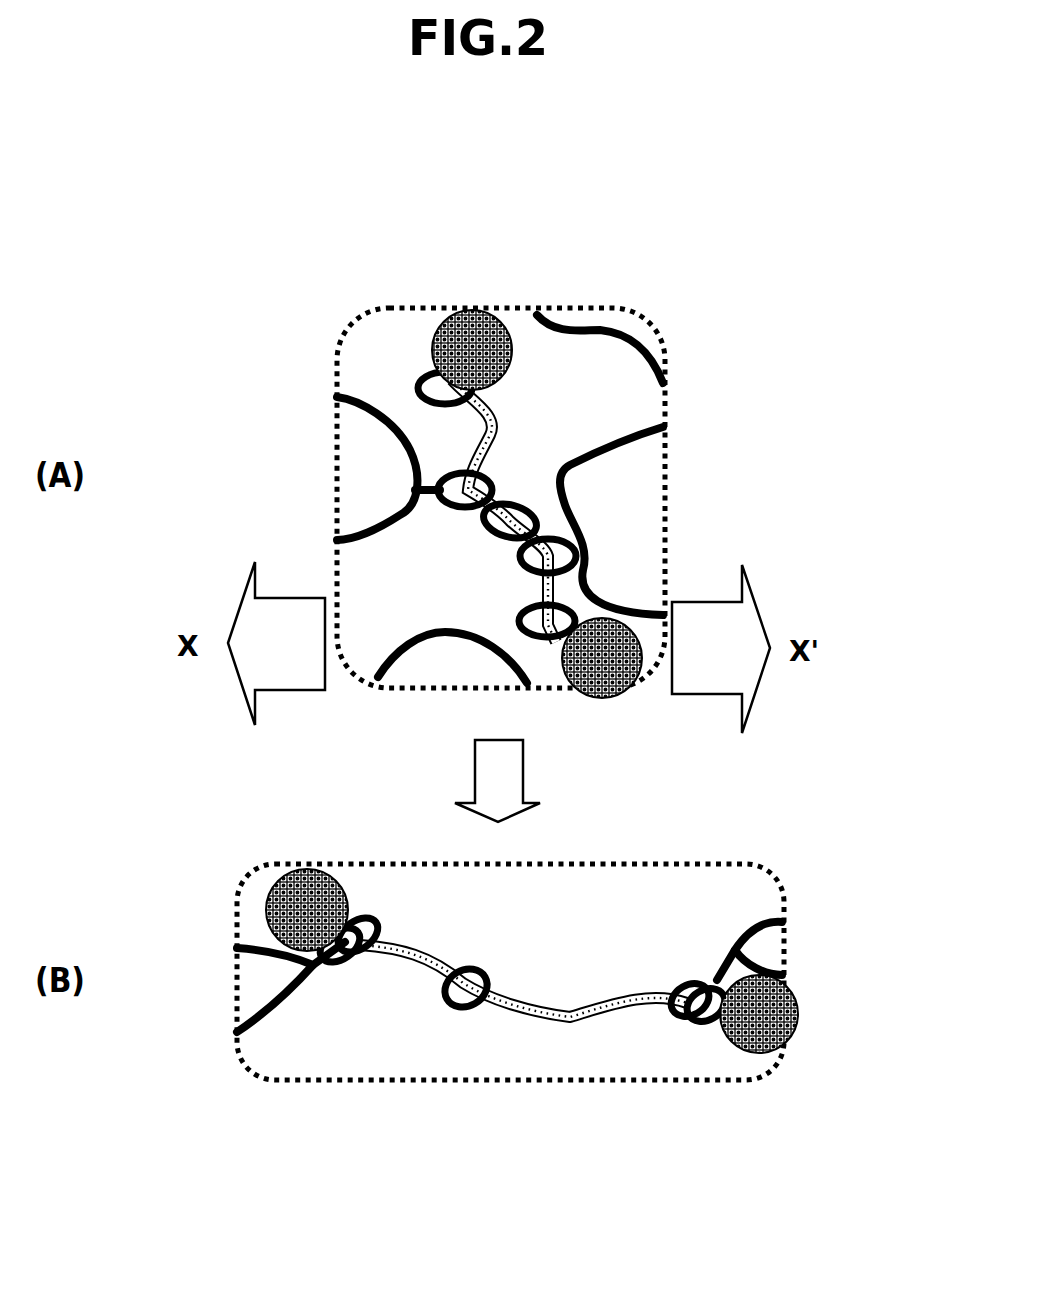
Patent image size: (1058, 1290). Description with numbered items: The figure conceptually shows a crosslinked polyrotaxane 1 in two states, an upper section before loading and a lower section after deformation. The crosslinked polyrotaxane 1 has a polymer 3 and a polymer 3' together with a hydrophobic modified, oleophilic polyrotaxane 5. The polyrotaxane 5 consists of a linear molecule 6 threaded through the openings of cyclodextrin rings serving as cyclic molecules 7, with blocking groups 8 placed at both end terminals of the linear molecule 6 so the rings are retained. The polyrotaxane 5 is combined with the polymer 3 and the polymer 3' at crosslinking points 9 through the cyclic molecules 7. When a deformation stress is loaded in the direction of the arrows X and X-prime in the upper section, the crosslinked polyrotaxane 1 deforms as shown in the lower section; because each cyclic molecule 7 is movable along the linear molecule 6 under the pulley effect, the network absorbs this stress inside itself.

The crosslinked polyrotaxane 1 is at (693, 238).
The polymer 3 is at (382, 782).
The polymer 3' is at (716, 703).
The polyrotaxane 5 is at (562, 430).
The linear molecule 6 is at (477, 438).
The cyclic molecule 7 is at (415, 378).
The blocking group 8 is at (467, 323).
The crosslinking point 9 is at (583, 513).